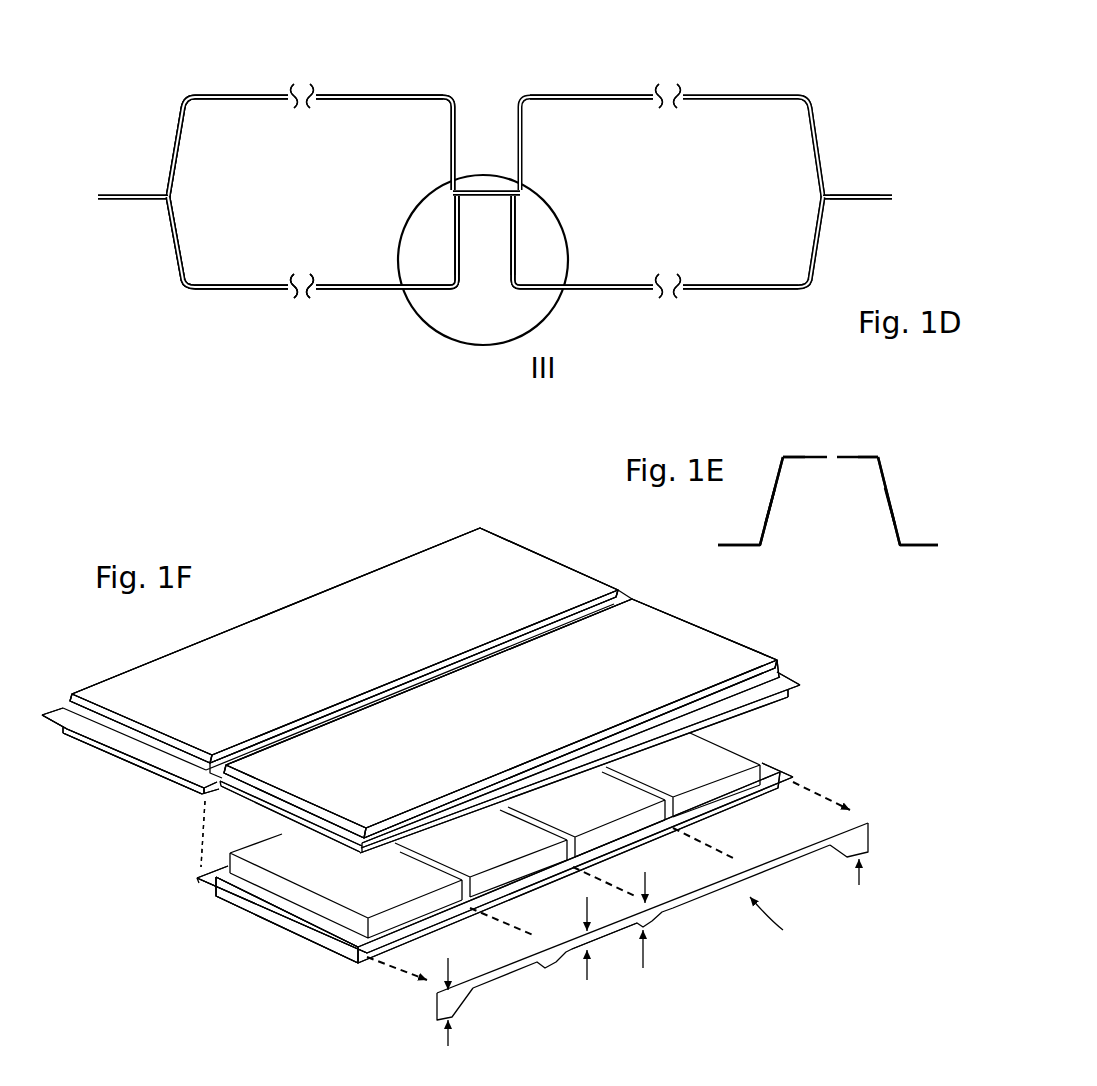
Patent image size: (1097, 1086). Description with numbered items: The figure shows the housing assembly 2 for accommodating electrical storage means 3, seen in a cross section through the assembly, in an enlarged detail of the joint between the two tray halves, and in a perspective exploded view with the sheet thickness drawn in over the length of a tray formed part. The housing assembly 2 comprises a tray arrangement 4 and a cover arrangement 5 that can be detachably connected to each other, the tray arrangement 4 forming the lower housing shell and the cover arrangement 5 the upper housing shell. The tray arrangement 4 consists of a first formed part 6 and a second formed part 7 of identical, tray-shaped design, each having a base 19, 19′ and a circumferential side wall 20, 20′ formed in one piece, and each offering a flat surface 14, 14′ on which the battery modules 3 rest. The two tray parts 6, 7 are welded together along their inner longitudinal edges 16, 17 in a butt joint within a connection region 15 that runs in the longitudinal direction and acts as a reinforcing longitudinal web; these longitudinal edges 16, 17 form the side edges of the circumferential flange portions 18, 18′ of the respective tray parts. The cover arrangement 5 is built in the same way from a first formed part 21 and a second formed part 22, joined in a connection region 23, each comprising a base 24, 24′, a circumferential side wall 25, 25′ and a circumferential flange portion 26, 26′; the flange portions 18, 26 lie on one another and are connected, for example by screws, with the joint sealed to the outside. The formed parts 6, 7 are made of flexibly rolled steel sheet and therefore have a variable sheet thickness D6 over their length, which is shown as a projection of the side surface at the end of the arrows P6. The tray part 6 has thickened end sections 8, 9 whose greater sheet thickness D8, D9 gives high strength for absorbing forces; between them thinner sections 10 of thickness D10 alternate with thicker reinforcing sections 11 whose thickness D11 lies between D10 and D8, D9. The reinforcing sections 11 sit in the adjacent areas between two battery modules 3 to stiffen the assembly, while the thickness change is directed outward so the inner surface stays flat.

In FIG. 1D, the housing assembly 2 is at (167, 77).
In FIG. 1F, the housing assembly 2 is at (252, 546).
In FIG. 1F, the electrical storage means 3 is at (719, 755).
In FIG. 1D, the tray arrangement 4 is at (237, 311).
In FIG. 1F, the tray arrangement 4 is at (149, 862).
In FIG. 1D, the cover arrangement 5 is at (259, 80).
In FIG. 1F, the cover arrangement 5 is at (366, 597).
In FIG. 1D, the first formed part 6 is at (752, 293).
In FIG. 1E, the first formed part 6 is at (904, 561).
In FIG. 1F, the first formed part 6 is at (227, 929).
In FIG. 1D, the second formed part 7 is at (353, 293).
In FIG. 1E, the second formed part 7 is at (749, 557).
In FIG. 1F, the second formed part 7 is at (139, 778).
In FIG. 1F, the thickened end section 8 is at (437, 1017).
In FIG. 1F, the thickened end section 9 is at (870, 836).
In FIG. 1F, the thinner section 10 is at (512, 977).
In FIG. 1F, the reinforcing section 11 is at (652, 927).
In FIG. 1D, the flat surface 14 is at (607, 284).
In FIG. 1D, the bottom of first trough 14′ is at (334, 282).
In FIG. 1D, the connection region 15 is at (487, 228).
In FIG. 1E, the connection region 15 is at (828, 469).
In FIG. 1E, the inner longitudinal edge 16 is at (825, 455).
In FIG. 1E, the inner longitudinal edge 17 is at (835, 455).
In FIG. 1D, the circumferential flange portion 18 is at (868, 206).
In FIG. 1E, the circumferential flange portion 18 is at (860, 455).
In FIG. 1F, the circumferential flange portion 18 is at (286, 918).
In FIG. 1E, the circumferential flange portion 18′ is at (800, 455).
In FIG. 1D, the base 19 is at (706, 285).
In FIG. 1E, the base 19 is at (925, 543).
In FIG. 1D, the bottom region 19′ is at (260, 285).
In FIG. 1E, the bottom region 19′ is at (730, 543).
In FIG. 1D, the circumferential side wall 20 is at (818, 256).
In FIG. 1E, the circumferential side wall 20 is at (887, 513).
In FIG. 1F, the circumferential side wall 20 is at (318, 940).
In FIG. 1D, the side wall of first trough 20′ is at (180, 248).
In FIG. 1E, the side wall of first trough 20′ is at (776, 500).
In FIG. 1F, the side wall of first trough 20′ is at (96, 747).
In FIG. 1D, the first formed part 21 is at (729, 91).
In FIG. 1F, the first formed part 21 is at (641, 635).
In FIG. 1D, the second formed part 22 is at (379, 93).
In FIG. 1F, the second formed part 22 is at (513, 556).
In FIG. 1D, the connection region 23 is at (485, 155).
In FIG. 1D, the base 24 is at (610, 100).
In FIG. 1D, the cover inner wall 24′ is at (349, 100).
In FIG. 1D, the circumferential side wall 25 is at (820, 137).
In FIG. 1F, the circumferential side wall 25 is at (783, 685).
In FIG. 1D, the cover side wall 25′ is at (184, 152).
In FIG. 1D, the circumferential flange portion 26 is at (872, 196).
In FIG. 1F, the circumferential flange portion 26 is at (790, 688).
In FIG. 1D, the flange 26′ is at (126, 194).
In FIG. 1F, the sheet thickness D6 is at (785, 923).
In FIG. 1F, the sheet thickness of end section D8 is at (466, 998).
In FIG. 1F, the sheet thickness of end section D9 is at (880, 876).
In FIG. 1F, the thickness of thinner section D10 is at (560, 938).
In FIG. 1F, the thickness of reinforcing section D11 is at (670, 914).
In FIG. 1F, the arrows P6 is at (865, 802).